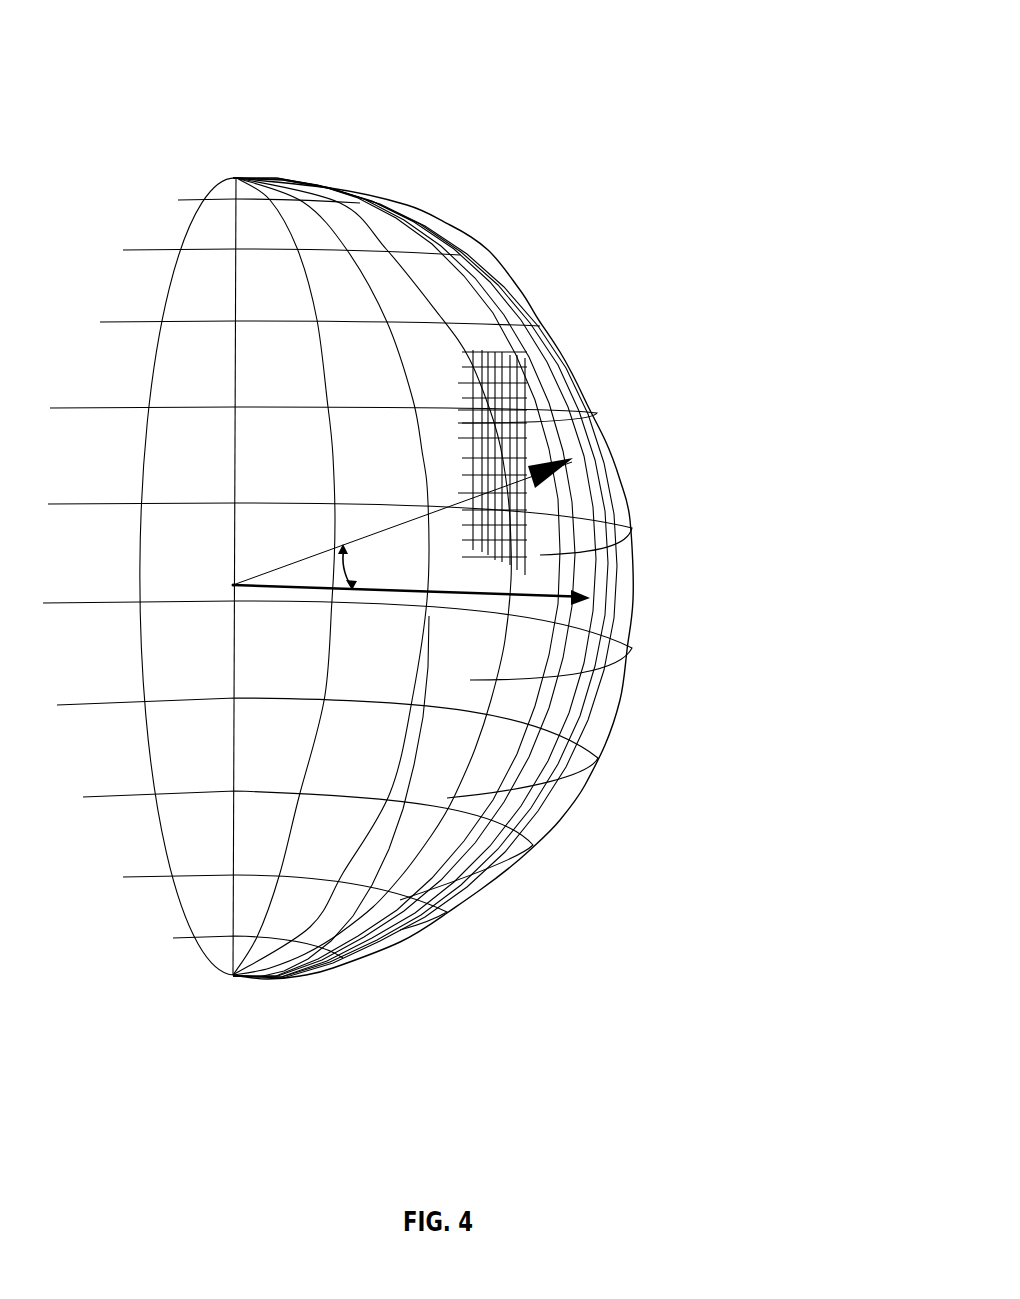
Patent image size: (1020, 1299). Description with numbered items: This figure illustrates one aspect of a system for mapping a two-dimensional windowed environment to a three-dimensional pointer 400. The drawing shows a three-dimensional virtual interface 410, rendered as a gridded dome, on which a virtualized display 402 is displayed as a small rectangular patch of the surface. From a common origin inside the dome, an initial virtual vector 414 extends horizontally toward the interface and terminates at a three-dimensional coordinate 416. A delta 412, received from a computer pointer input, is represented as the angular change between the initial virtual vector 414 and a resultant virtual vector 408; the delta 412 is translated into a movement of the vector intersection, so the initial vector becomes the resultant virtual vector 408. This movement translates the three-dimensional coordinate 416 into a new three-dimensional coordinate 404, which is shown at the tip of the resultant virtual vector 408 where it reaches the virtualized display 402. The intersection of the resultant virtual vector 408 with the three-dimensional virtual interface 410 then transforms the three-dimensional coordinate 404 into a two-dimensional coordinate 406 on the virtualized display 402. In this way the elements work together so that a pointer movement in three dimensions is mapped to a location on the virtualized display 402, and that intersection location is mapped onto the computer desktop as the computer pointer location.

The system for mapping a 2D windowed environment to a 3D pointer 400 is at (467, 490).
The virtualized display 402 is at (473, 363).
The three-dimensional coordinate 404 is at (578, 461).
The two-dimensional coordinate 406 is at (512, 488).
The resultant virtual vector 408 is at (284, 564).
The three-dimensional virtual interface 410 is at (152, 367).
The delta 412 is at (350, 562).
The initial virtual vector 414 is at (300, 592).
The three-dimensional coordinate 416 is at (592, 598).